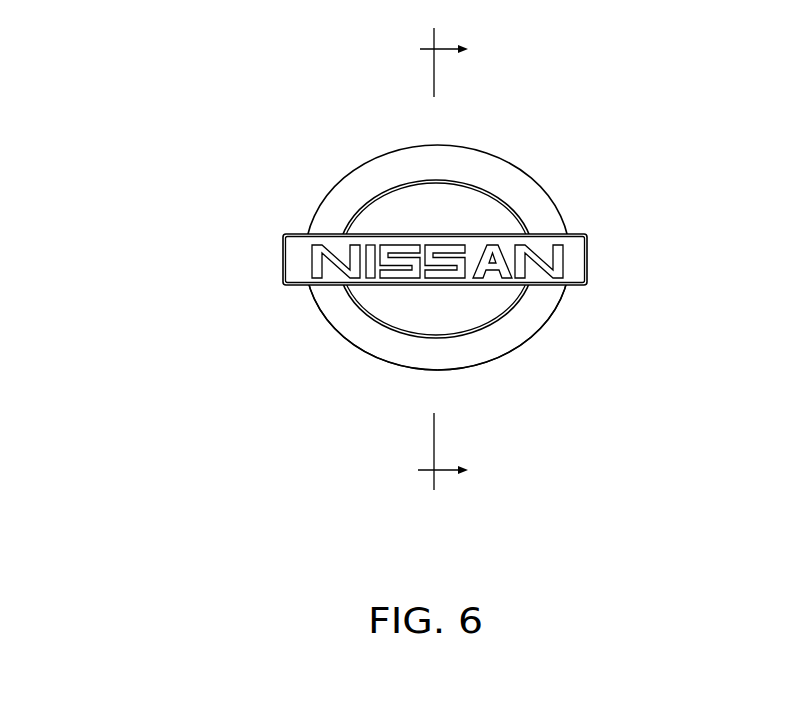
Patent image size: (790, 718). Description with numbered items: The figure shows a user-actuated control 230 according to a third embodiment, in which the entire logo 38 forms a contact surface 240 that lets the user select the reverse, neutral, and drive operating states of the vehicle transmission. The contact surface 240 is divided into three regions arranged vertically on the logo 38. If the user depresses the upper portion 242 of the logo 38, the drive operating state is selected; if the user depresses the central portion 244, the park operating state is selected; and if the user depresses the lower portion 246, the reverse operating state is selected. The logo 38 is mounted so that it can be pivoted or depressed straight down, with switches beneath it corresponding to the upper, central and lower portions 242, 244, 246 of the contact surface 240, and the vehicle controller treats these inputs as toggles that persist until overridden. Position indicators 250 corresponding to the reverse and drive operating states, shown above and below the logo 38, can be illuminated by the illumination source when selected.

The user-actuated control 230 is at (143, 218).
The logo 38 is at (335, 190).
The upper portion 242 is at (487, 167).
The contact surface 240 is at (328, 321).
The lower portion 246 is at (450, 358).
The central portion 244 is at (587, 252).
The position indicators 250 is at (445, 103).